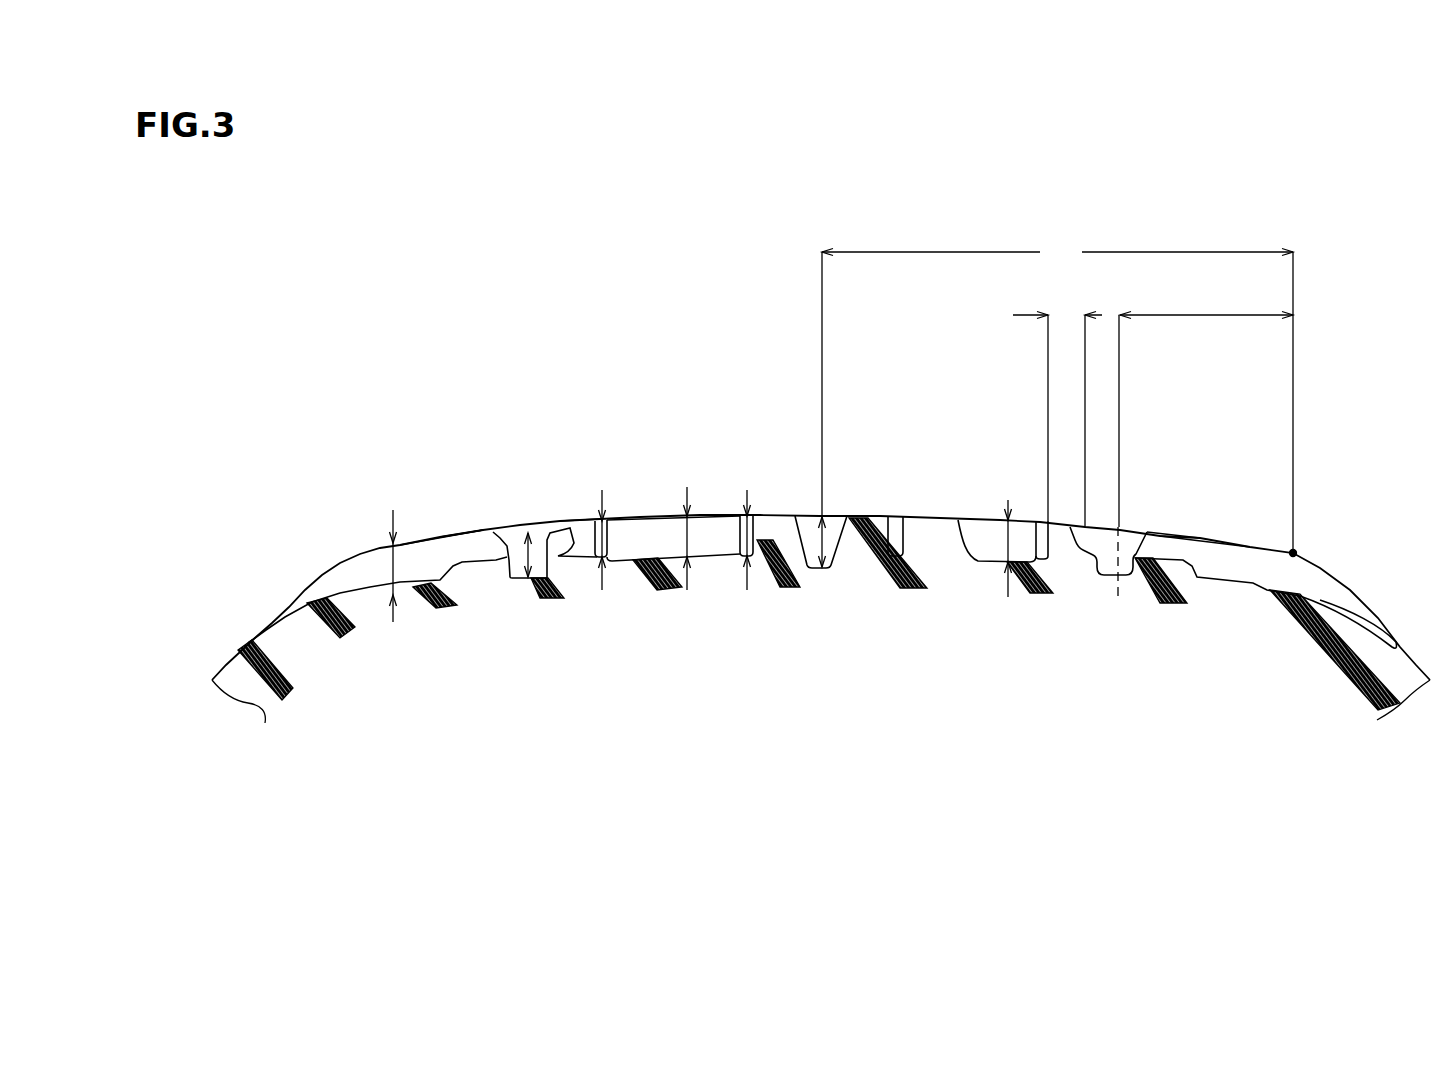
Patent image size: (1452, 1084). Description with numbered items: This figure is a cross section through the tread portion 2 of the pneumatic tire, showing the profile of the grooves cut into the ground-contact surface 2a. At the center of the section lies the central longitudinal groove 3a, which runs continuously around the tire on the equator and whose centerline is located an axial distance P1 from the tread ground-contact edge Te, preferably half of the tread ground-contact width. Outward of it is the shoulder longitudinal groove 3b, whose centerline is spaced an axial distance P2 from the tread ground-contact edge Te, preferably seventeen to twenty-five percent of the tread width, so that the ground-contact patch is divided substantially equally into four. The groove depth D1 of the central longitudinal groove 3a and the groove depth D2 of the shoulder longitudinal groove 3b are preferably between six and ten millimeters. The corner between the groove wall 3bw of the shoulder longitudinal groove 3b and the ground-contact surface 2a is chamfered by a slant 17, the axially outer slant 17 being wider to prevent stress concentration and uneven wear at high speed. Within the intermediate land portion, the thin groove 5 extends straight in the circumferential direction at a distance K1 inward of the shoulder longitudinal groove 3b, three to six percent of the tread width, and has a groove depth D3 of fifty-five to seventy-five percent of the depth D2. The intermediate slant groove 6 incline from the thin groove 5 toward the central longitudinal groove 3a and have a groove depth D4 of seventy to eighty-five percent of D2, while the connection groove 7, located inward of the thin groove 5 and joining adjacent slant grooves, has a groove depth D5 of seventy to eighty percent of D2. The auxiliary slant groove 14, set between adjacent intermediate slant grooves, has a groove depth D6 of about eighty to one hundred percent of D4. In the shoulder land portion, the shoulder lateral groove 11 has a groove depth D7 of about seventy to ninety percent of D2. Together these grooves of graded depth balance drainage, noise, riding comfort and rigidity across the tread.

The tread portion 2 is at (613, 345).
The ground-contact surface 2a is at (423, 540).
The central longitudinal groove 3a is at (838, 512).
The shoulder longitudinal groove 3b is at (507, 512).
The groove wall 3bw is at (1112, 575).
The thin groove 5 is at (603, 527).
The intermediate slant groove 6 is at (665, 537).
The connection groove 7 is at (754, 537).
The shoulder lateral groove 11 is at (355, 580).
The auxiliary slant groove 14 is at (983, 513).
The slant 17 is at (498, 540).
The tread ground-contact edge Te is at (1293, 553).
The distance from tread ground-contact edge to central longitudinal groove centerlin P1 is at (1057, 397).
The axial distance between shoulder longitudinal groove centerline and tread ground- P2 is at (1206, 408).
The distance between thin groove and shoulder longitudinal groove K1 is at (1057, 408).
The groove depth of central longitudinal groove D1 is at (830, 548).
The groove depth of shoulder longitudinal groove D2 is at (521, 563).
The groove depth of thin groove D3 is at (600, 568).
The groove depth of intermediate slant groove D4 is at (686, 545).
The groove depth of connection groove D5 is at (752, 548).
The groove depth of auxiliary slant groove D6 is at (1005, 542).
The groove depth of shoulder lateral groove D7 is at (396, 583).